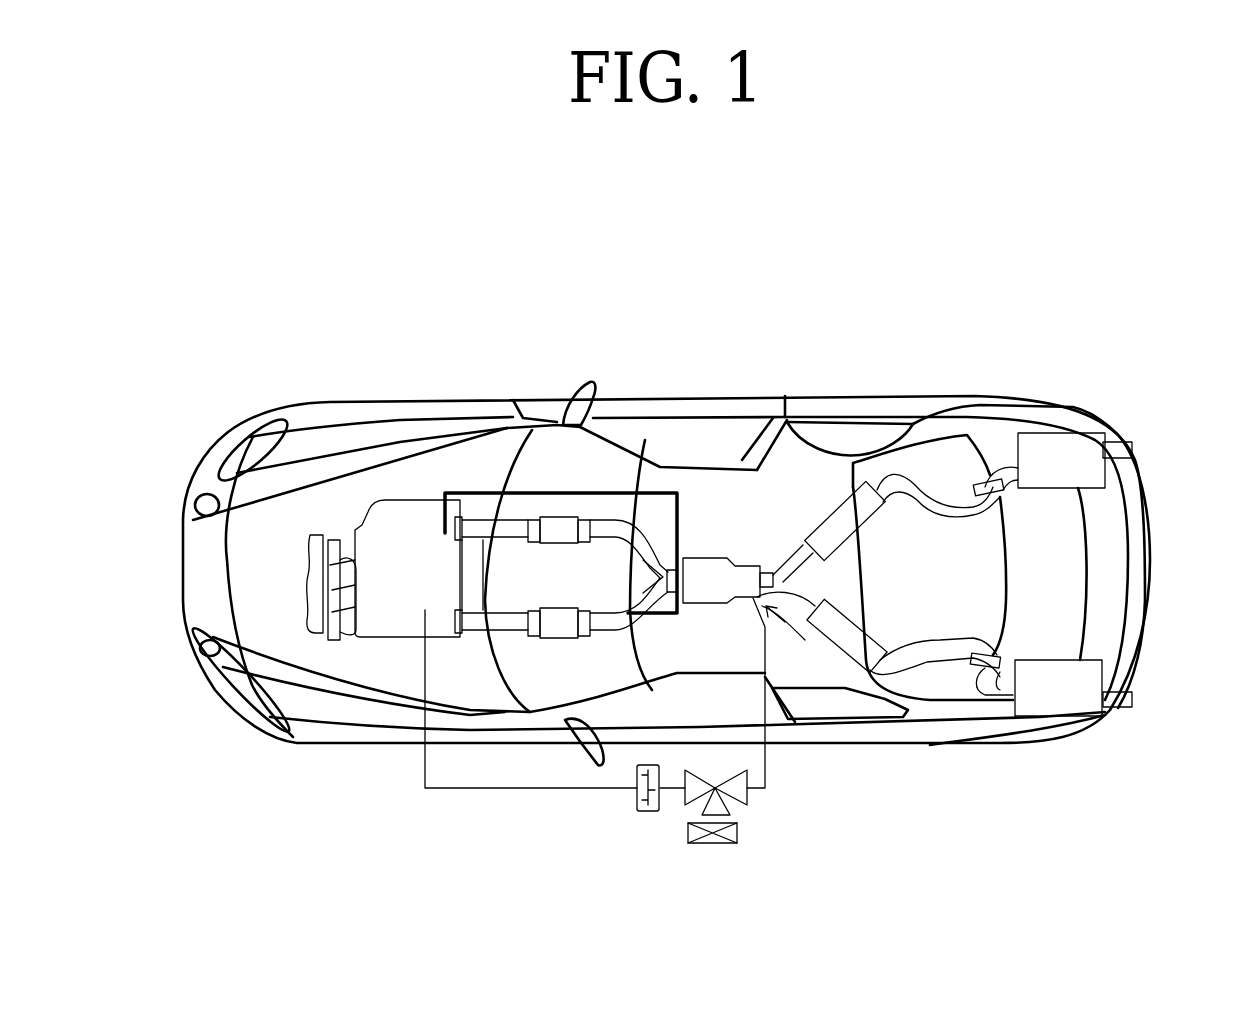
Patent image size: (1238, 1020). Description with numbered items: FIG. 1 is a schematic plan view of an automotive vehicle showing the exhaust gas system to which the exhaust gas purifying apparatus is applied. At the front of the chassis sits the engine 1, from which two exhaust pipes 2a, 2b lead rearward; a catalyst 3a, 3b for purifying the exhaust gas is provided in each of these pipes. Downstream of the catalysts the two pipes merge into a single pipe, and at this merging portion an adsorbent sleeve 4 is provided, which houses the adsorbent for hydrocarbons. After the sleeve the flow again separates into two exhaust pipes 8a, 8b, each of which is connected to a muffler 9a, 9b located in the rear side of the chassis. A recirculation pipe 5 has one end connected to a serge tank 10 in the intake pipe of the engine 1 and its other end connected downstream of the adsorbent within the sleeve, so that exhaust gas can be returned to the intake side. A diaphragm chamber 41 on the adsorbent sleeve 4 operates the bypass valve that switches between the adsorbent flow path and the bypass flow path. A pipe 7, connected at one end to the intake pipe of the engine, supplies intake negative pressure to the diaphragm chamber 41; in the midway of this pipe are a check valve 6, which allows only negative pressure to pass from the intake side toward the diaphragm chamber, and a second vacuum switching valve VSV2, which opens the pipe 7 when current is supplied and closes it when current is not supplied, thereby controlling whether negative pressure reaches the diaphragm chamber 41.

The engine 1 is at (333, 530).
The serge tank 10 is at (410, 530).
The recirculation pipe 5 is at (598, 497).
The exhaust pipe 2a is at (497, 540).
The exhaust pipe 2b is at (478, 635).
The catalyst 3a is at (562, 545).
The catalyst 3b is at (562, 640).
The adsorbent sleeve 4 is at (702, 560).
The diaphragm chamber 41 is at (877, 582).
The exhaust pipe 8a is at (945, 512).
The exhaust pipe 8b is at (932, 648).
The muffler 9a is at (1068, 445).
The muffler 9b is at (1090, 690).
The pipe 7 is at (497, 795).
The check valve 6 is at (645, 815).
The second vacuum switching valve VSV2 is at (722, 845).